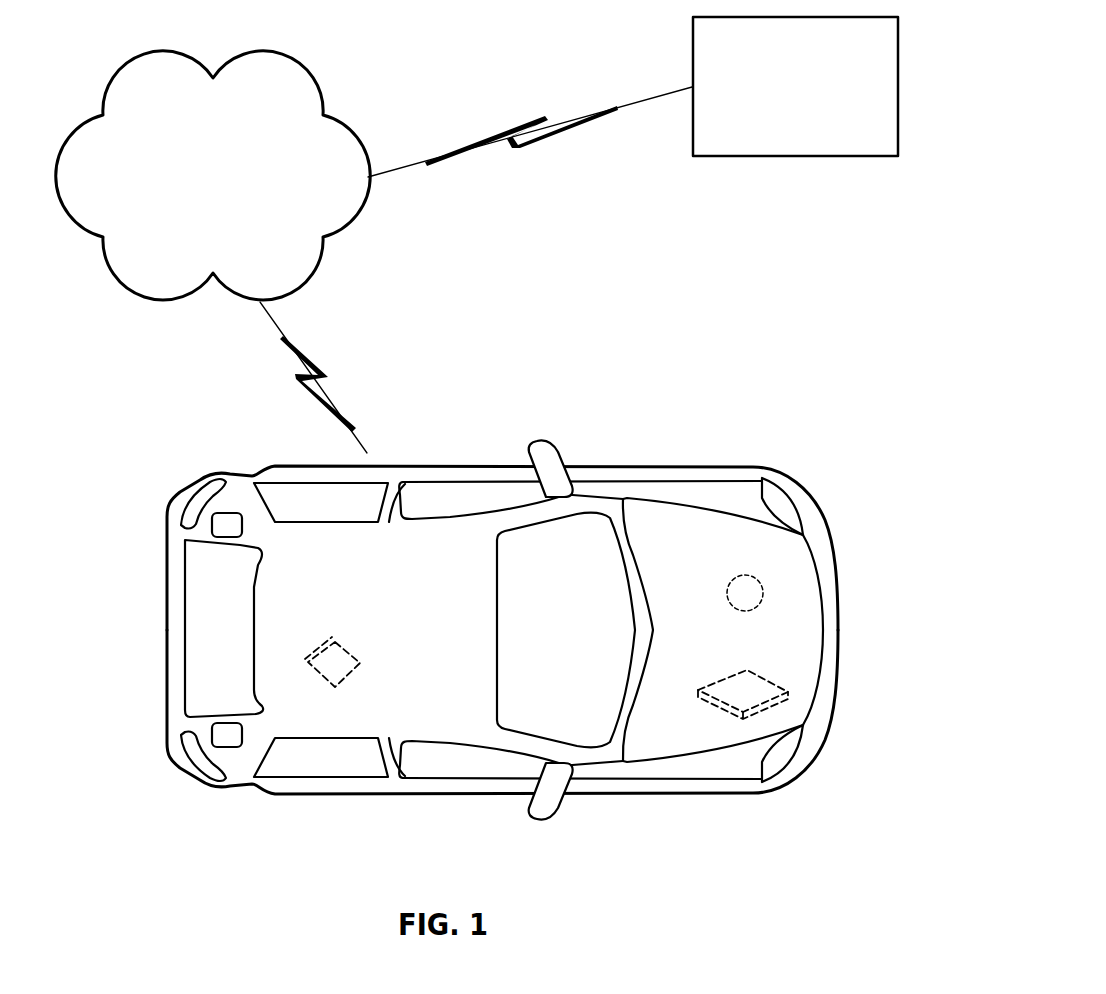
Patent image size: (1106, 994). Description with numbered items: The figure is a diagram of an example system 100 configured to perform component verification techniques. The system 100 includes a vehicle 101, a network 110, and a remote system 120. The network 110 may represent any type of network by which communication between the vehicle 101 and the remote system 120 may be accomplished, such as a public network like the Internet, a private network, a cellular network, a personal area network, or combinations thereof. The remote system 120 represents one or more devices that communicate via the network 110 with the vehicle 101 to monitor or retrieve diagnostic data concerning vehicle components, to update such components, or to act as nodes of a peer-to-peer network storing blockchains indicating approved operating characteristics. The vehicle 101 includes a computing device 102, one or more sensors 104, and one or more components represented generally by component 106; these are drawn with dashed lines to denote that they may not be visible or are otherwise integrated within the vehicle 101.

The system 100 is at (975, 78).
The vehicle 101 is at (623, 466).
The computing device 102 is at (720, 678).
The sensors 104 is at (745, 575).
The component 106 is at (337, 641).
The network 110 is at (196, 202).
The remote system 120 is at (779, 125).